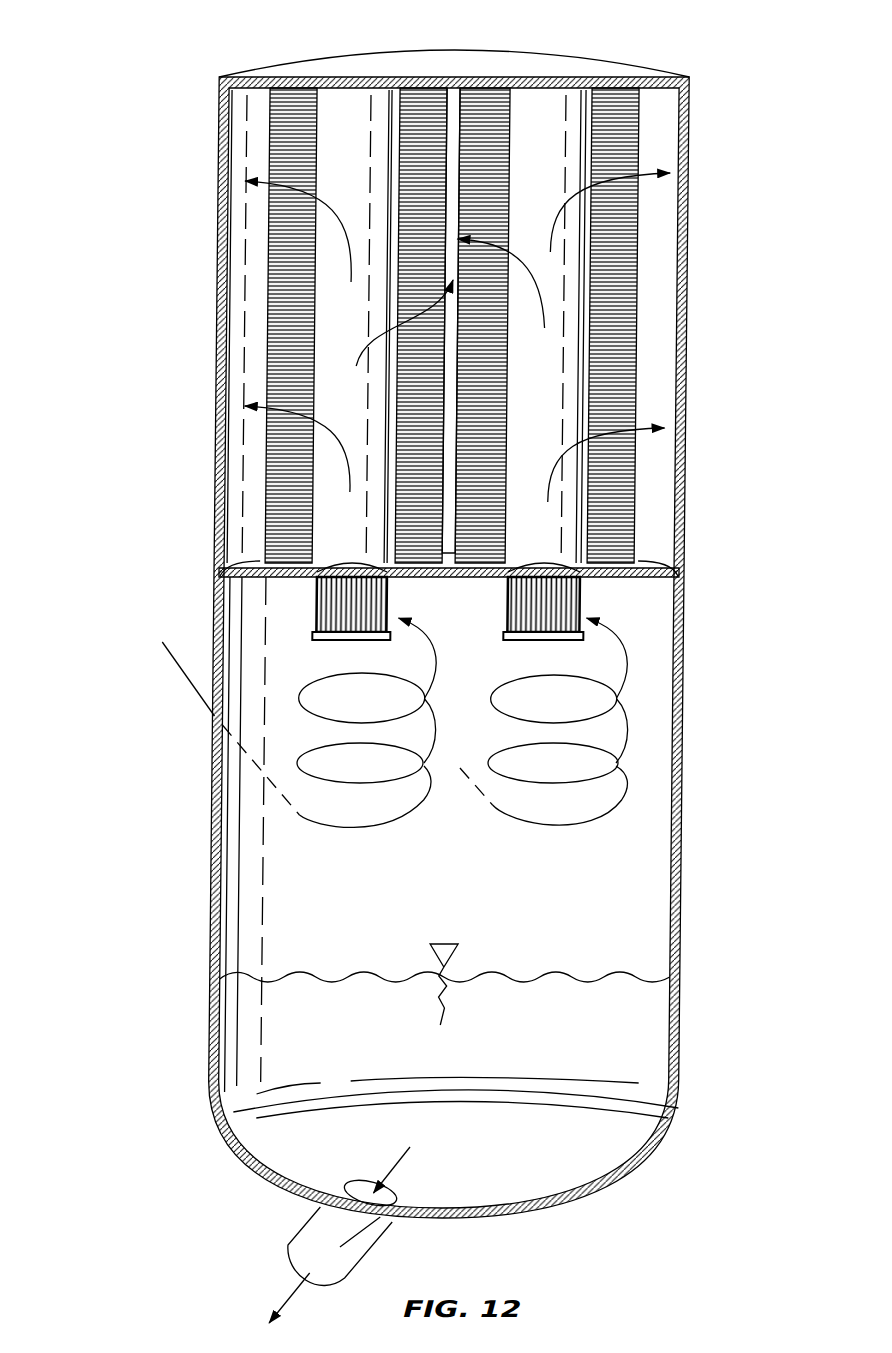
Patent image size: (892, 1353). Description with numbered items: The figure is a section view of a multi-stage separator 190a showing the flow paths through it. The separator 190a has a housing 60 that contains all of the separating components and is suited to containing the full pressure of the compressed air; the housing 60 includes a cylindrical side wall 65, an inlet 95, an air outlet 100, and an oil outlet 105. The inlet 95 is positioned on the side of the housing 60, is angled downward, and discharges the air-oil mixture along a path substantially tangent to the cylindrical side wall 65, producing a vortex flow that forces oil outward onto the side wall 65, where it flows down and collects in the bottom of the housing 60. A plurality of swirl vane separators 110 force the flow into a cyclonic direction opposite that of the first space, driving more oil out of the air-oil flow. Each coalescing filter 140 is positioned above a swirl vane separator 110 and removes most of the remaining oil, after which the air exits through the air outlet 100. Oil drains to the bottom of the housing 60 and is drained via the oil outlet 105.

The separator 190a is at (112, 139).
The air outlet 100 is at (459, 233).
The coalescing filter 140 is at (288, 291).
The swirl vane separator 110 is at (394, 593).
The inlet 95 is at (194, 677).
The cylindrical side wall 65 is at (690, 832).
The housing 60 is at (219, 953).
The oil outlet 105 is at (316, 1241).